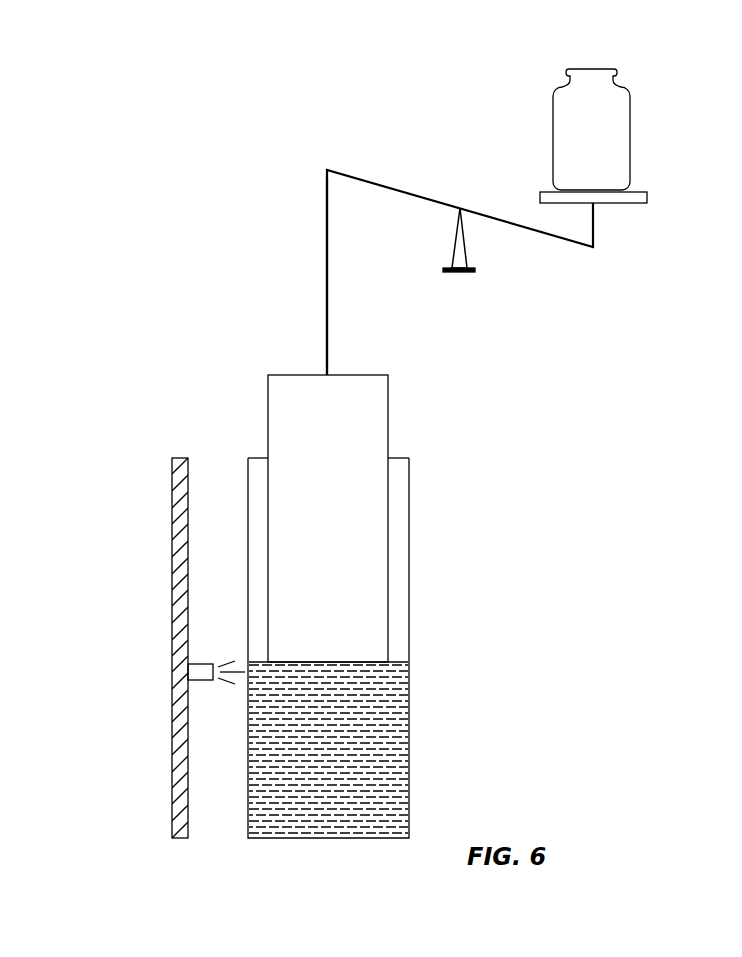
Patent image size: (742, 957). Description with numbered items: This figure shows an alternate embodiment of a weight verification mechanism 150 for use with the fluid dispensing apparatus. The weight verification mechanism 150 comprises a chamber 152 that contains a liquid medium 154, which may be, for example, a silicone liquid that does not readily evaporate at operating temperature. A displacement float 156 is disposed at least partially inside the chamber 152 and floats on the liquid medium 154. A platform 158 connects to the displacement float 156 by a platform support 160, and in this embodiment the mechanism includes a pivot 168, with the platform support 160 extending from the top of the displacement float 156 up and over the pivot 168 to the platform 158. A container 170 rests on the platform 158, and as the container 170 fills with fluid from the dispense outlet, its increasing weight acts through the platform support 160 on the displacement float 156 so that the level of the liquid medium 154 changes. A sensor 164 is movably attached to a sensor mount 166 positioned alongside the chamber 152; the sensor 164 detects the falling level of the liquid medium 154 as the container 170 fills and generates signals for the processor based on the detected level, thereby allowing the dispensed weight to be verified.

The weight verification mechanism 150 is at (254, 182).
The chamber 152 is at (397, 507).
The liquid medium 154 is at (373, 723).
The displacement float 156 is at (360, 638).
The platform 158 is at (635, 196).
The platform support 160 is at (327, 330).
The sensor 164 is at (202, 665).
The sensor mount 166 is at (180, 773).
The pivot 168 is at (463, 245).
The container 170 is at (610, 118).